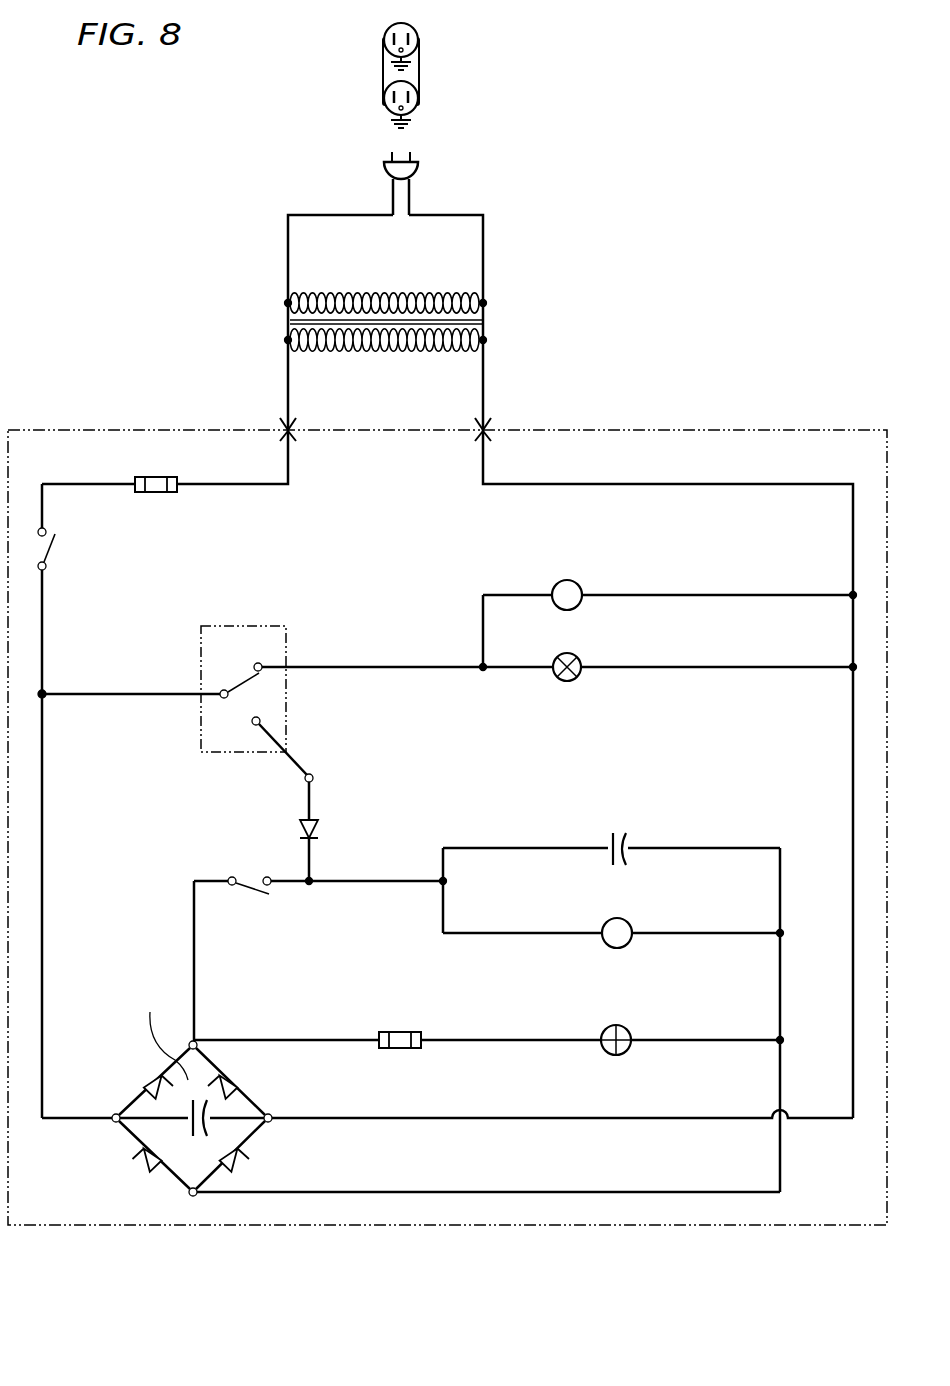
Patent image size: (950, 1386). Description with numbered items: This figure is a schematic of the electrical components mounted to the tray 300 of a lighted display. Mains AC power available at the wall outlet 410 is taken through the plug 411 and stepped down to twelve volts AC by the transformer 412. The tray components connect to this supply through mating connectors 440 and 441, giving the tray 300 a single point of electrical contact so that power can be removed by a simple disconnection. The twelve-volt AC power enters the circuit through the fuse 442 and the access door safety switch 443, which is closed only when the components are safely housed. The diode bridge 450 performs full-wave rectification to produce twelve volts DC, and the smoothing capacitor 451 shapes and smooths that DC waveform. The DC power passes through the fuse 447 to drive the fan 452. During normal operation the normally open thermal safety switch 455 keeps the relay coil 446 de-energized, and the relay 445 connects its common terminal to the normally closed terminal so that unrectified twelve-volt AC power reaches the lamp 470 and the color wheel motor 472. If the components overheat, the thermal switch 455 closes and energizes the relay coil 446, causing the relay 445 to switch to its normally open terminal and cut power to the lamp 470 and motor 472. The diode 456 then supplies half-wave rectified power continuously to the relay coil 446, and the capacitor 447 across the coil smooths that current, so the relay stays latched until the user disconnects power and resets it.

The tray 300 is at (781, 429).
The wall outlet 410 is at (542, 58).
The plug 411 is at (418, 166).
The transformer 412 is at (462, 293).
The connector 440 is at (488, 438).
The connector 441 is at (488, 428).
The fuse 442 is at (148, 455).
The access door safety switch 443 is at (76, 557).
The relay 445 is at (262, 625).
The relay coil 446 is at (630, 945).
The fuse / capacitor 447 is at (607, 815).
The diode bridge 450 is at (123, 1126).
The smoothing capacitor 451 is at (210, 1126).
The fan 452 is at (627, 1052).
The thermal safety switch 455 is at (247, 891).
The diode 456 is at (303, 824).
The lamp 470 is at (553, 678).
The color wheel motor 472 is at (582, 590).